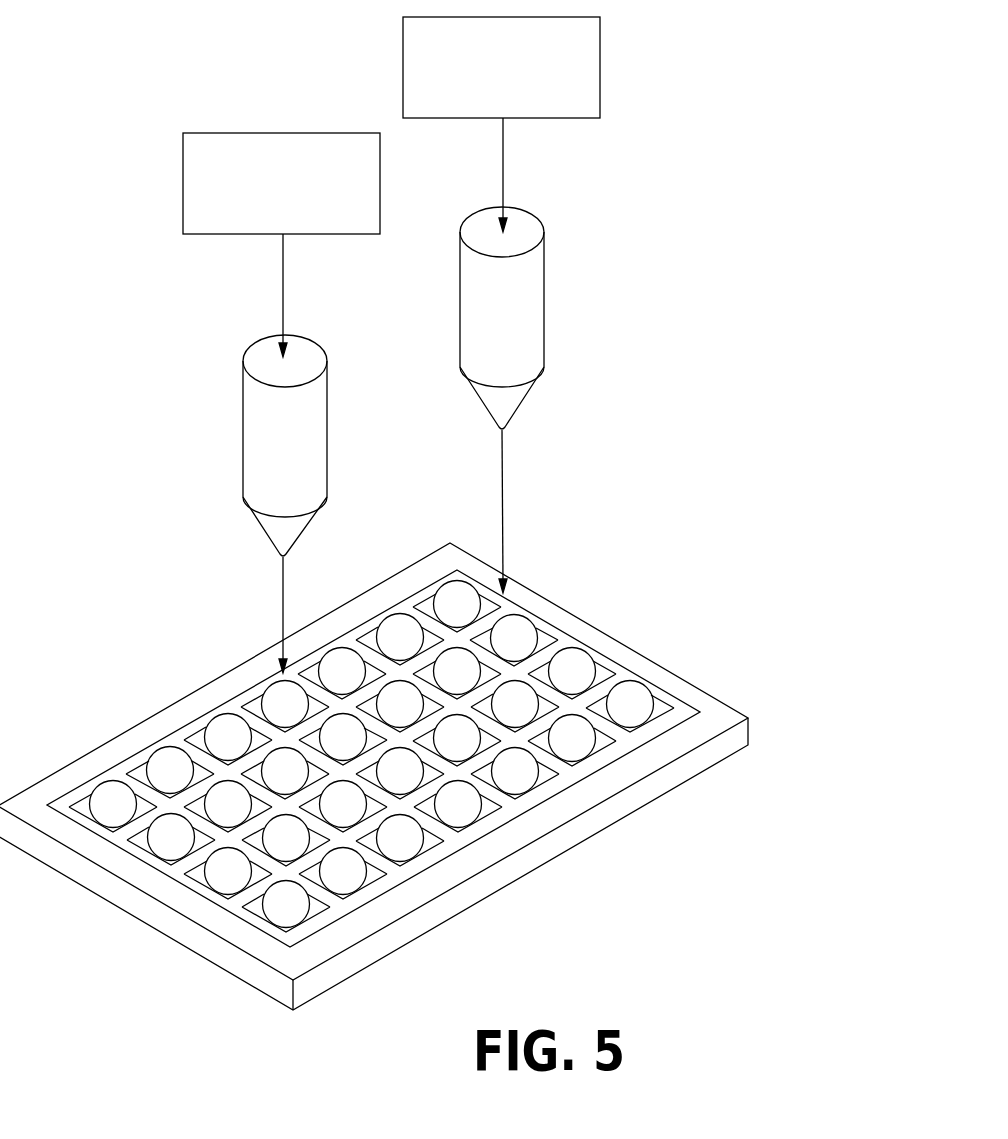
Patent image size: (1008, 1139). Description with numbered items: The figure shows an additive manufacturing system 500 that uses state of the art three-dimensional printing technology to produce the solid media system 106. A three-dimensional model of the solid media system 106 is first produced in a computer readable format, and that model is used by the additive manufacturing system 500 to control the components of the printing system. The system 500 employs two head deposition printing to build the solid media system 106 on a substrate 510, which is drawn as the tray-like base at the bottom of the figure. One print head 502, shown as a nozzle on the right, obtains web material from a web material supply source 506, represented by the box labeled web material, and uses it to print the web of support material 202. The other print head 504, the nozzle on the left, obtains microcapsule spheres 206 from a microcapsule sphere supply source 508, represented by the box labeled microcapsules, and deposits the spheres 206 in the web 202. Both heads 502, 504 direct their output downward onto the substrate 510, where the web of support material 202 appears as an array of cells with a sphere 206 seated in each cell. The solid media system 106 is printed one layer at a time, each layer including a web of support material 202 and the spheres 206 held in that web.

The additive manufacturing system 500 is at (237, 72).
The web material supply source 506 is at (600, 80).
The microcapsule sphere supply source 508 is at (183, 213).
The print head 502 is at (544, 335).
The print head 504 is at (245, 463).
The substrate 510 is at (148, 908).
The solid media system 106 is at (713, 783).
The web of support material 202 is at (197, 733).
The spheres 206 is at (113, 803).